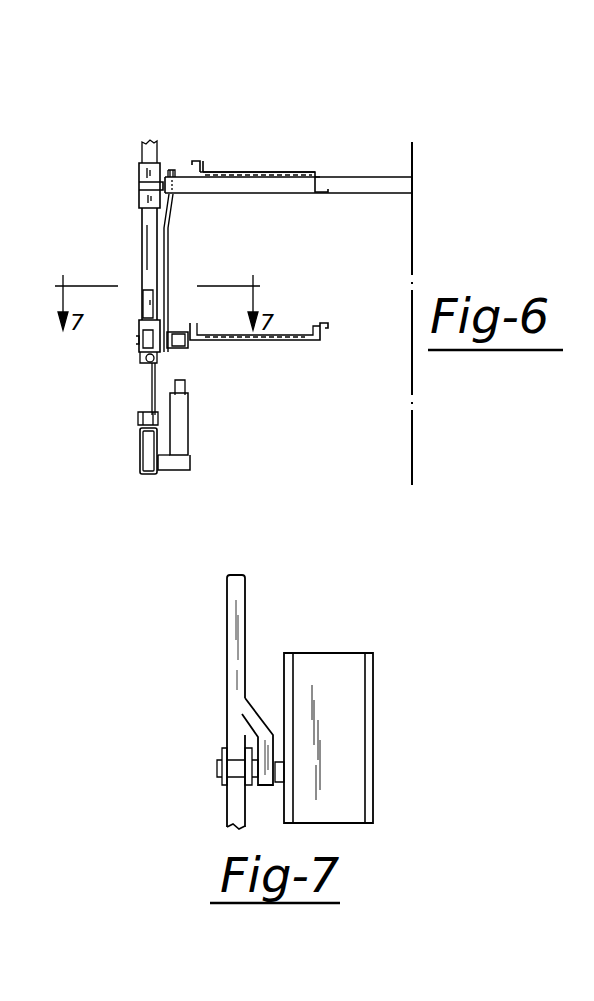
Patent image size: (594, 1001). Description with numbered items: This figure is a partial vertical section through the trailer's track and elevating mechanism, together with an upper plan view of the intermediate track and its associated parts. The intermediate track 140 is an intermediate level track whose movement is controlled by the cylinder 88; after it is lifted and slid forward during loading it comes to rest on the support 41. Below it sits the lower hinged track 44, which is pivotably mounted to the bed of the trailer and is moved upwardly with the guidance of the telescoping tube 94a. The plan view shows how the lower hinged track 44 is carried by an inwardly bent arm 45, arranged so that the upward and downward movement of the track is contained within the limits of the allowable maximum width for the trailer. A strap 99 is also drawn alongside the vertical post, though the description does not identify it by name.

In FIG. 6, the intermediate track 140 is at (277, 172).
In FIG. 6, the support 41 is at (143, 197).
In FIG. 6, the strap 99 is at (170, 251).
In FIG. 6, the inwardly bent arm 45 is at (189, 342).
In FIG. 7, the inwardly bent arm 45 is at (245, 710).
In FIG. 6, the lower hinged track 44 is at (283, 345).
In FIG. 7, the lower hinged track 44 is at (353, 703).
In FIG. 6, the cylinder 88 is at (139, 360).
In FIG. 6, the telescoping tube 94a is at (186, 433).